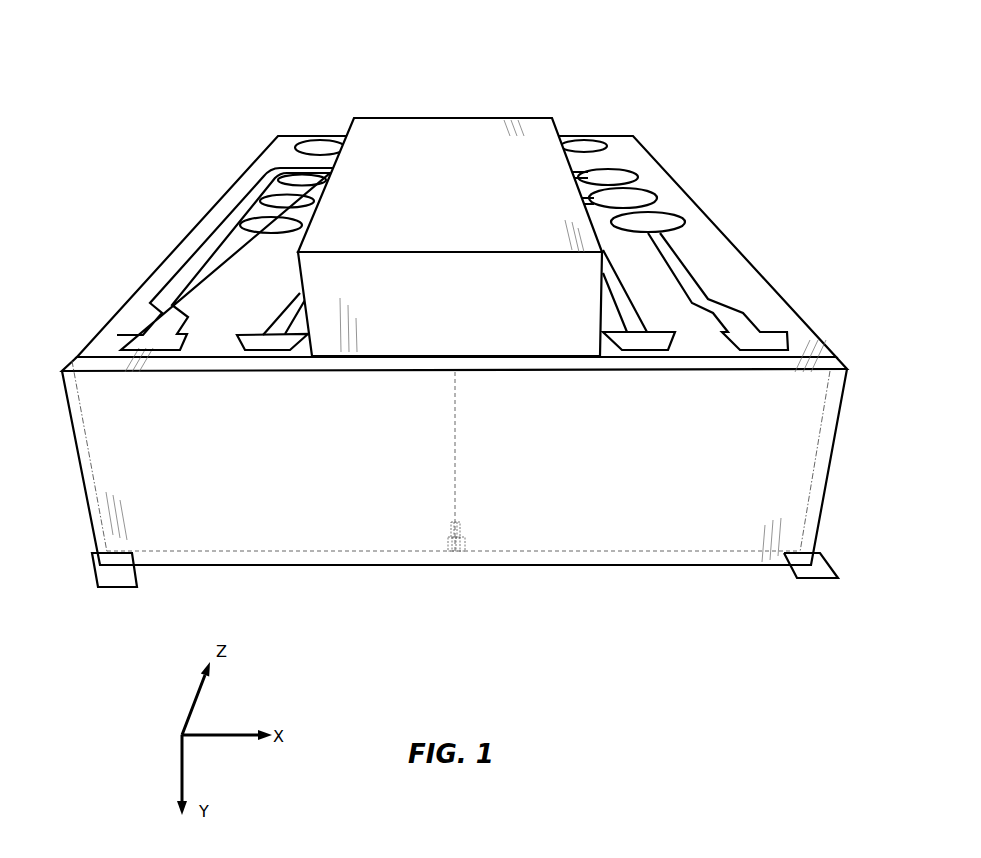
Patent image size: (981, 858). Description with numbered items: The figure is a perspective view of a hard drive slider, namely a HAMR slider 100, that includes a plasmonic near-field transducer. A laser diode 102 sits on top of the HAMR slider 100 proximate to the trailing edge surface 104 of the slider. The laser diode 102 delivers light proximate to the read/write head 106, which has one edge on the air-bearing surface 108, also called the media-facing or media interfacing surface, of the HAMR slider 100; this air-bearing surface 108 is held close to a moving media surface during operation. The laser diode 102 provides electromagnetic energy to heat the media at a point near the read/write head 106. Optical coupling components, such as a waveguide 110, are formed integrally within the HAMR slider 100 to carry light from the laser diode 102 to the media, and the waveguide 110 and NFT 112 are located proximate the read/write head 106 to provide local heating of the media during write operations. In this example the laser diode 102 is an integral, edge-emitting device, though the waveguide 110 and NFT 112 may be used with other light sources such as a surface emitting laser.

The HAMR slider 100 is at (645, 78).
The laser diode 102 is at (372, 118).
The trailing edge surface 104 is at (120, 587).
The read/write head 106 is at (461, 552).
The air-bearing surface 108 is at (827, 580).
The waveguide 110 is at (455, 445).
The NFT 112 is at (453, 553).